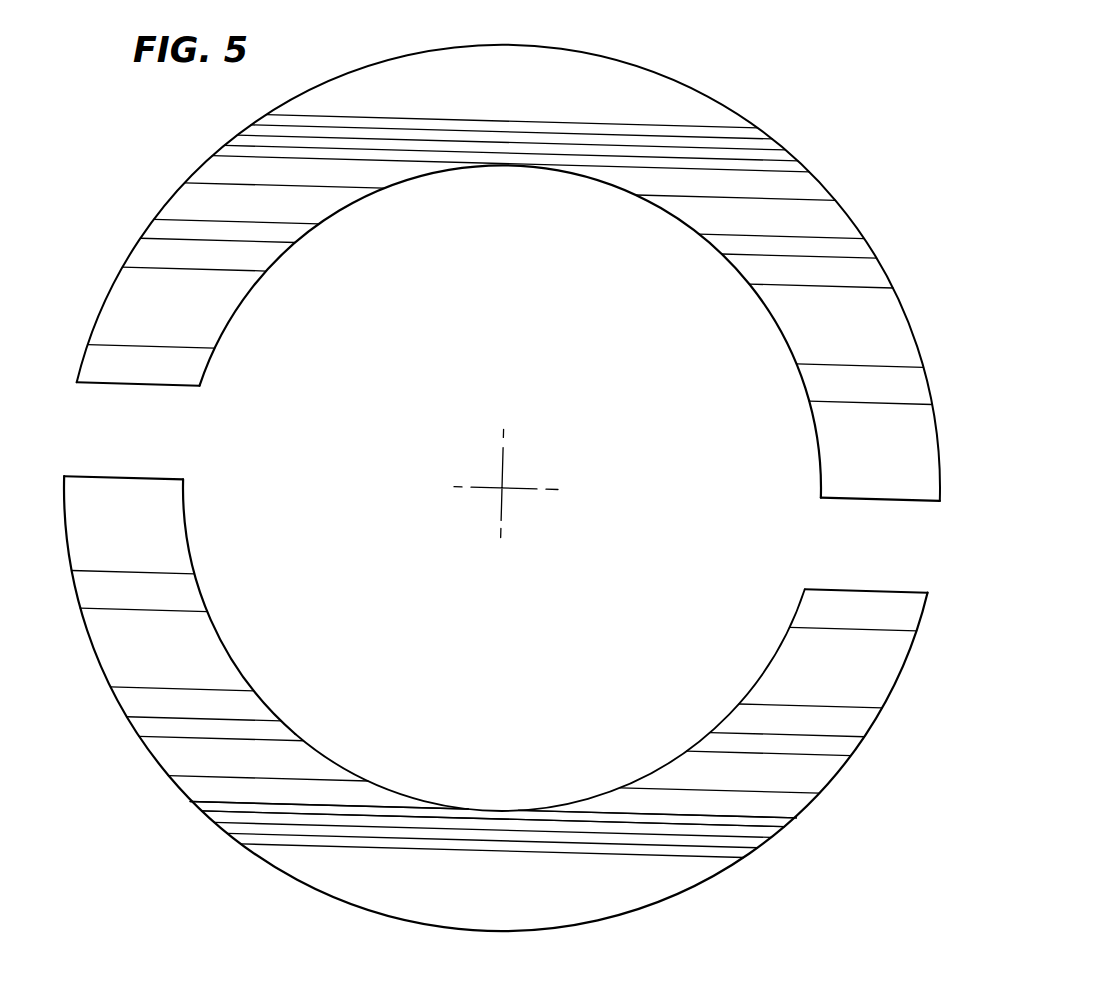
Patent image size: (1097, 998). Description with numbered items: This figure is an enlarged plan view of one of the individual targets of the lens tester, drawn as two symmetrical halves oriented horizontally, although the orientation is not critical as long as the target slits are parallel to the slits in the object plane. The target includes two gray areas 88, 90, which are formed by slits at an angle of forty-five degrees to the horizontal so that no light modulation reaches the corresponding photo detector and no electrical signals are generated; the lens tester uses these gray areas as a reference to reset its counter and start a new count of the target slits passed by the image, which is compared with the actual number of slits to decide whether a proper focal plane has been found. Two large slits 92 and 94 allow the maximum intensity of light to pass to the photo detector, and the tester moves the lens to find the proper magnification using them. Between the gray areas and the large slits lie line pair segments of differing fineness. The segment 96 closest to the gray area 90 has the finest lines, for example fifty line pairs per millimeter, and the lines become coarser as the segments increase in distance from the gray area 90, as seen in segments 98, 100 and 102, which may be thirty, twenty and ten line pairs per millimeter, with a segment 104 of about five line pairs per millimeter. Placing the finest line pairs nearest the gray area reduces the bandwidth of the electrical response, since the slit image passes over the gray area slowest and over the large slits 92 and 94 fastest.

The gray area 88 is at (695, 82).
The gray area 90 is at (535, 903).
The large slit 92 is at (835, 438).
The large slit 94 is at (170, 508).
The segment 96 is at (222, 820).
The segment 98 is at (205, 808).
The segment 100 is at (185, 790).
The segment 102 is at (322, 762).
The segment 104 is at (213, 650).